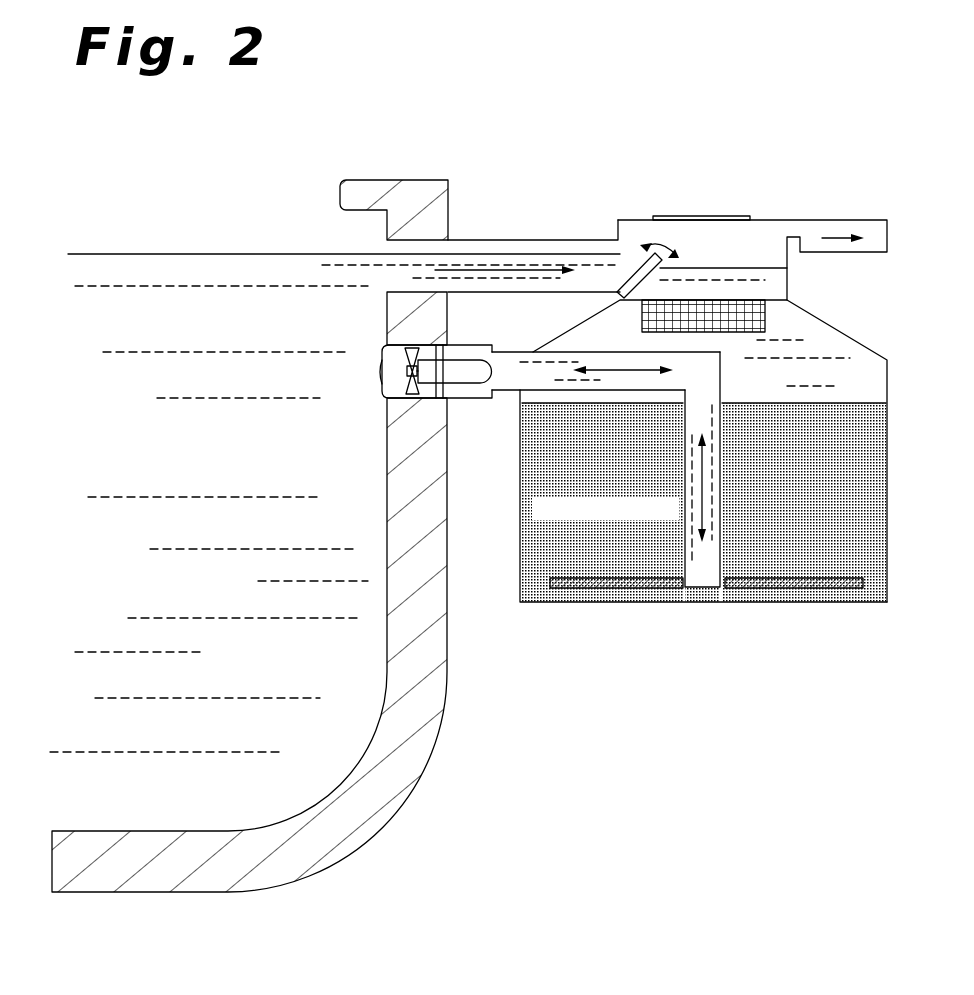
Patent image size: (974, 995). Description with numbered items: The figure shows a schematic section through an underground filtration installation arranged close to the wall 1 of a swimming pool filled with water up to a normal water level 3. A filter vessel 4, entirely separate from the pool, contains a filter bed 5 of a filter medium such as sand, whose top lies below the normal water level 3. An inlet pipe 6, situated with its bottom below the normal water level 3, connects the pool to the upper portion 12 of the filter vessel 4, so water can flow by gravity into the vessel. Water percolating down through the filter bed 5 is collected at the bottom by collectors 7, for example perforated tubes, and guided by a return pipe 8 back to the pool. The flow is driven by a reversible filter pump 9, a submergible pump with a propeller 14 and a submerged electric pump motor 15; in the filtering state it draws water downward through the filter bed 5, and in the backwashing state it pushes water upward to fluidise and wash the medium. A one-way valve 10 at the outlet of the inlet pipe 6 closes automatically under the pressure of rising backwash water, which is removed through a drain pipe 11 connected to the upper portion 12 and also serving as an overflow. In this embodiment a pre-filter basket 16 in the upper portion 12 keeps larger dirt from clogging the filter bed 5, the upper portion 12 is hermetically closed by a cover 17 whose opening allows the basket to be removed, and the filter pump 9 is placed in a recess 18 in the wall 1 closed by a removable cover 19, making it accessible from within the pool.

The wall 1 is at (430, 652).
The normal water level 3 is at (214, 254).
The filter vessel 4 is at (908, 361).
The filter bed 5 is at (867, 485).
The inlet pipe 6 is at (565, 240).
The collectors 7 is at (775, 589).
The return pipe 8 is at (505, 400).
The filter pump 9 is at (455, 395).
The one-way valve 10 is at (638, 285).
The drain pipe 11 is at (875, 220).
The upper portion 12 is at (787, 286).
The propeller 14 is at (412, 352).
The electric pump motor 15 is at (472, 372).
The pre-filter basket 16 is at (733, 300).
The cover 17 is at (714, 217).
The recess 18 is at (486, 400).
The removable cover 19 is at (383, 382).